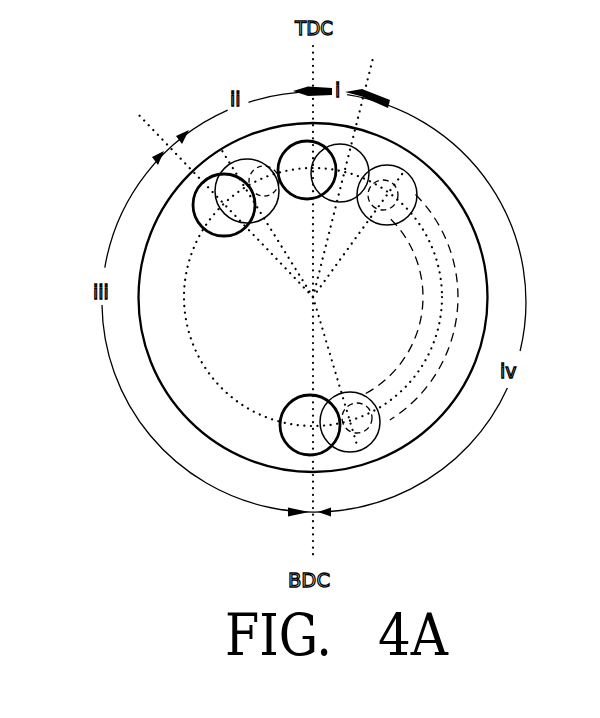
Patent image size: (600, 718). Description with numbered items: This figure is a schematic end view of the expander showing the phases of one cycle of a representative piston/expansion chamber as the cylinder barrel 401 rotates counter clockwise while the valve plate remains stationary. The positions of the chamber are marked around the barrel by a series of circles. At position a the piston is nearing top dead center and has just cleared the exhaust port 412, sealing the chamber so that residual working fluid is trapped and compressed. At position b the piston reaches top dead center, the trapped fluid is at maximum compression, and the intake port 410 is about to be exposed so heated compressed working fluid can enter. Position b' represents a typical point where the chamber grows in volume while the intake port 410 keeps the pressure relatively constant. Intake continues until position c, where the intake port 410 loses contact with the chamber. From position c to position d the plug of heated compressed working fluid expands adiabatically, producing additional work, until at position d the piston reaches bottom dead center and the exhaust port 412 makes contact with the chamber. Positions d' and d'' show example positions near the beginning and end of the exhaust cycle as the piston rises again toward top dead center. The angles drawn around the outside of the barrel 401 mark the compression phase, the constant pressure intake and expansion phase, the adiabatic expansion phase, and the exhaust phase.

The cylinder barrel 401 is at (168, 352).
The intake port 410 is at (276, 162).
The exhaust port 412 is at (443, 232).
The position a is at (369, 165).
The position b is at (346, 128).
The position b' is at (217, 138).
The position c is at (193, 190).
The position d is at (248, 462).
The position d' is at (414, 441).
The position d'' is at (426, 169).